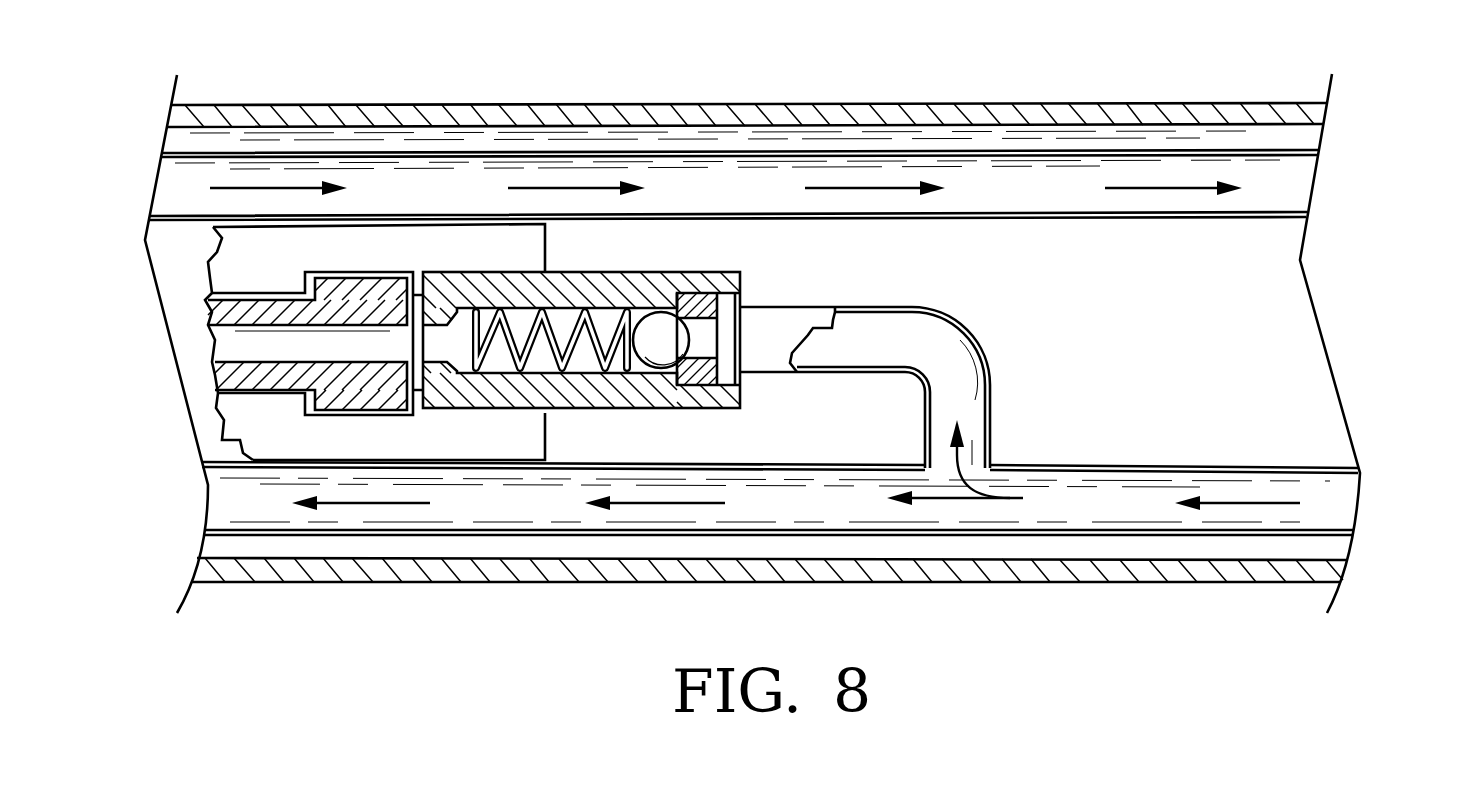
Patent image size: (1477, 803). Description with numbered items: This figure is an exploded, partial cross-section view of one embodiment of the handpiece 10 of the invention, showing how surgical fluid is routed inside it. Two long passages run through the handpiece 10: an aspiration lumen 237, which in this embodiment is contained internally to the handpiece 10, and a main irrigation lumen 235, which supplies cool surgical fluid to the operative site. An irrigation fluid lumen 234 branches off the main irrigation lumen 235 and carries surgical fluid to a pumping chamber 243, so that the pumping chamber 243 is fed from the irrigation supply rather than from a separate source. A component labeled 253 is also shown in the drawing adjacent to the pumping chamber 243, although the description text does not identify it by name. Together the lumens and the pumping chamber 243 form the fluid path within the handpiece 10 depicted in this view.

The handpiece 10 is at (698, 90).
The aspiration lumen 237 is at (1288, 181).
The main irrigation lumen 235 is at (1345, 505).
The check valve 253 is at (688, 272).
The pumping chamber 243 is at (213, 312).
The irrigation fluid lumen 234 is at (992, 402).